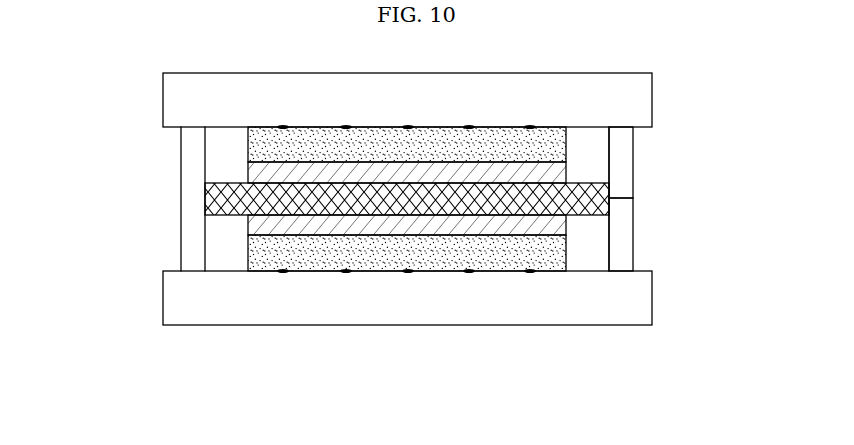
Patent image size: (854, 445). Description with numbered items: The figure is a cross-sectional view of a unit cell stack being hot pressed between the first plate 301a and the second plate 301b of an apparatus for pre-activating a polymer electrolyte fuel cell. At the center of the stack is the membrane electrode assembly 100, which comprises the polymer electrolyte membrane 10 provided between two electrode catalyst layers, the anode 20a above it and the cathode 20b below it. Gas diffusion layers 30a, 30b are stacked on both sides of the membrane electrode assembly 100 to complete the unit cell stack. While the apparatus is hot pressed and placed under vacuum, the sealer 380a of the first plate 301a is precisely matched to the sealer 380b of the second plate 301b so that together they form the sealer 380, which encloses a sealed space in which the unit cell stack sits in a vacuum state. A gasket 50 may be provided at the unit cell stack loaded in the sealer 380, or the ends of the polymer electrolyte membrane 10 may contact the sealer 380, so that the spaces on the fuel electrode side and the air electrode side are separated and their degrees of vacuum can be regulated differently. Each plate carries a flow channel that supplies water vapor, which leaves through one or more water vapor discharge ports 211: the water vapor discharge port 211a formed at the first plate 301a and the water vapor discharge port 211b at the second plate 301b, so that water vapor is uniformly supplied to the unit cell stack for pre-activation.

The polymer electrolyte membrane 10 is at (205, 195).
The anode 20a is at (263, 175).
The cathode 20b is at (248, 220).
The gas diffusion layer 30a is at (263, 148).
The gas diffusion layer 30b is at (248, 250).
The gasket 50 is at (590, 253).
The membrane electrode assembly 100 is at (311, 196).
The water vapor discharge port 211 is at (406, 277).
The water vapor discharge port 211a is at (283, 127).
The water vapor discharge port 211b is at (408, 271).
The first plate 301a is at (220, 97).
The second plate 301b is at (245, 303).
The sealer 380 is at (708, 199).
The sealer 380a is at (622, 160).
The sealer 380b is at (625, 237).